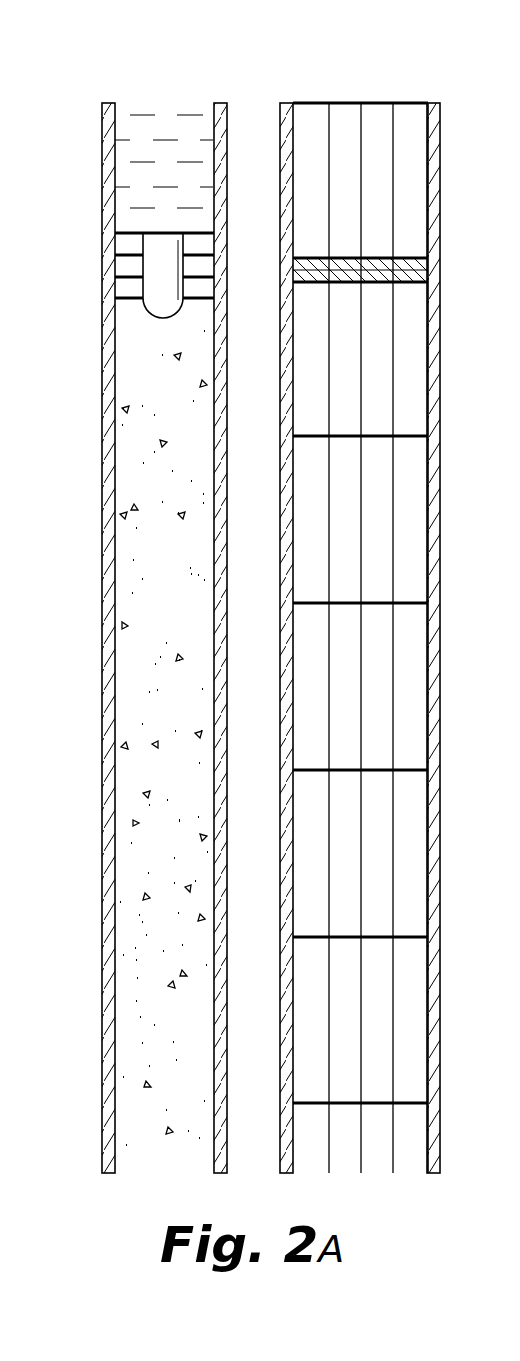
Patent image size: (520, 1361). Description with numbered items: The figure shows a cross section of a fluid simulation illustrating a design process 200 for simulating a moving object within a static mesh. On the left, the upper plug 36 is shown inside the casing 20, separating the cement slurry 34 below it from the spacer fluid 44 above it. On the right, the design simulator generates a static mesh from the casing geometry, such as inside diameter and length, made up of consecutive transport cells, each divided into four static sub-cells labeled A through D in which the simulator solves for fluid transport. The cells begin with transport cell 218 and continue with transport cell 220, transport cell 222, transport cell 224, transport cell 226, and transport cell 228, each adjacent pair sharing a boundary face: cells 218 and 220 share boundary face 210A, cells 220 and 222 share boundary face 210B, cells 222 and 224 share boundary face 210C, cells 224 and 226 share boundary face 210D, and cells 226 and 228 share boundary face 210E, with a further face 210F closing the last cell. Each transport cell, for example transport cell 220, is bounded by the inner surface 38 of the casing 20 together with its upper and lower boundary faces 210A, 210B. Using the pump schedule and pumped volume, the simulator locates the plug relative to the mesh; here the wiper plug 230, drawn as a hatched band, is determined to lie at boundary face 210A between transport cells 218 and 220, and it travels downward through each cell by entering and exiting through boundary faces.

The casing 20 is at (108, 165).
The spacer fluid 44 is at (197, 162).
The upper plug 36 is at (162, 252).
The cement slurry 34 is at (147, 448).
The inner surface 38 is at (292, 378).
The design process 200 is at (378, 590).
The transport cell 218 is at (430, 163).
The transport cell 220 is at (430, 360).
The transport cell 222 is at (431, 522).
The transport cell 224 is at (430, 700).
The transport cell 226 is at (430, 862).
The transport cell 228 is at (430, 1025).
The wiper plug 230 is at (312, 283).
The boundary face 210A is at (378, 272).
The boundary face 210B is at (376, 438).
The boundary face 210C is at (376, 606).
The boundary face 210D is at (376, 773).
The boundary face 210E is at (376, 940).
The divider plate F 210F is at (376, 1106).